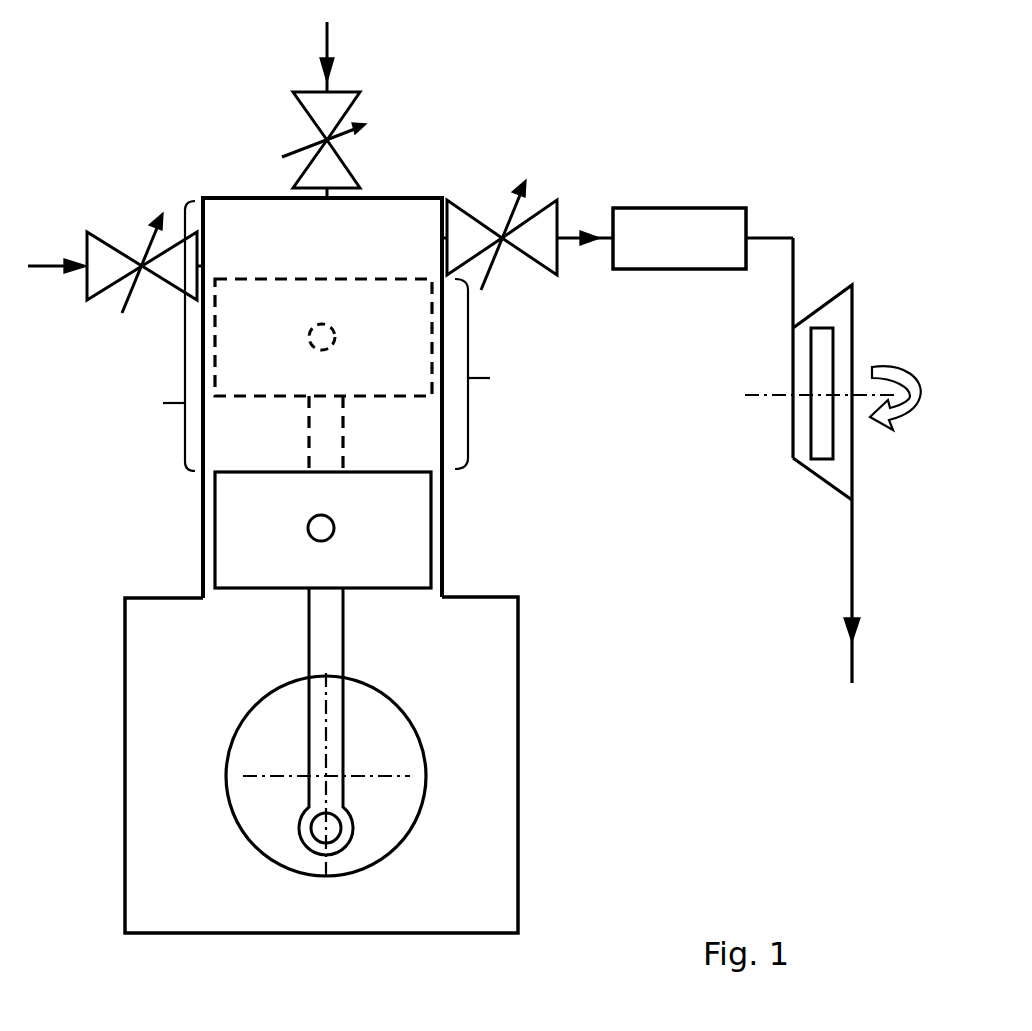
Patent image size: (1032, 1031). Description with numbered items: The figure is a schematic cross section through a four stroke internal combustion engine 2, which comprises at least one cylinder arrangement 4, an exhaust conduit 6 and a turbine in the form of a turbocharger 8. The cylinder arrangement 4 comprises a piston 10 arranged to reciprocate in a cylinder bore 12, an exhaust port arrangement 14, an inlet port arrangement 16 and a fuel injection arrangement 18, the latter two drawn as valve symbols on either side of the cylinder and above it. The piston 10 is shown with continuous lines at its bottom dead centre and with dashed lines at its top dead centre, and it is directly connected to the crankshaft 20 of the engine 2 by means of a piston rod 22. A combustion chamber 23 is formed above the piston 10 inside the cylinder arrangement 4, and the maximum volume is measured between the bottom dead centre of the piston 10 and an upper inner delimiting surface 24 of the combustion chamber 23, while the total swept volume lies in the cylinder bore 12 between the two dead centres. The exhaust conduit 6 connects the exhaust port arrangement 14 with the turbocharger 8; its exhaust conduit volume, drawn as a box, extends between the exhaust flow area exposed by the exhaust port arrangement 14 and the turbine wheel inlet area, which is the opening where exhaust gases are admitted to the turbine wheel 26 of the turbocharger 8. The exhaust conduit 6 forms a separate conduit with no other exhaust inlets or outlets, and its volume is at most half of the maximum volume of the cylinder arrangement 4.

The four stroke internal combustion engine 2 is at (482, 115).
The cylinder arrangement 4 is at (492, 432).
The exhaust conduit 6 is at (710, 208).
The turbocharger 8 is at (842, 323).
The piston 10 is at (402, 357).
The cylinder bore 12 is at (443, 536).
The exhaust port arrangement 14 is at (550, 302).
The inlet port arrangement 16 is at (92, 318).
The fuel injection arrangement 18 is at (372, 72).
The crankshaft 20 is at (402, 738).
The piston rod 22 is at (335, 632).
The combustion chamber 23 is at (268, 259).
The upper inner delimiting surface 24 is at (357, 208).
The turbine wheel 26 is at (823, 443).